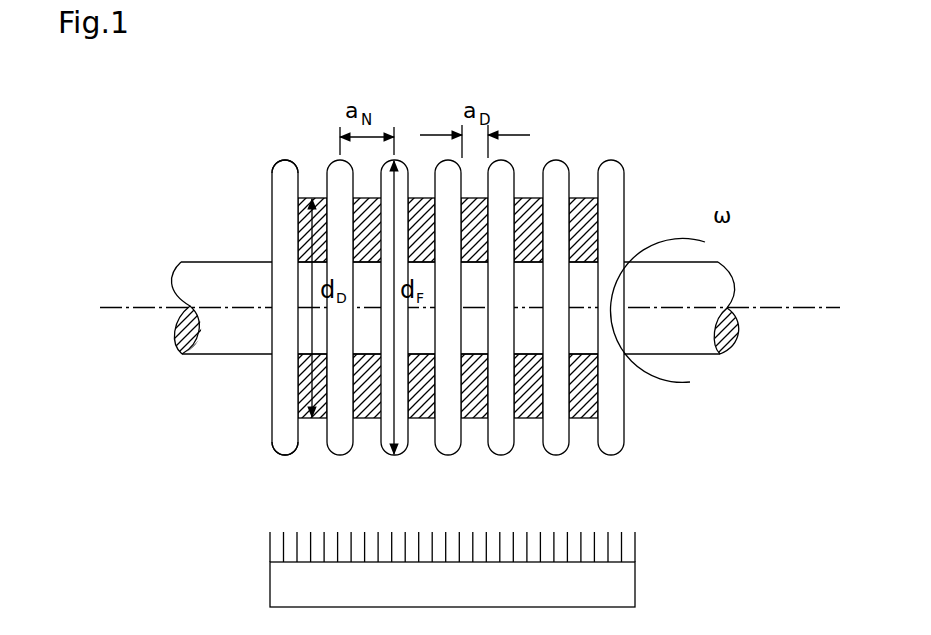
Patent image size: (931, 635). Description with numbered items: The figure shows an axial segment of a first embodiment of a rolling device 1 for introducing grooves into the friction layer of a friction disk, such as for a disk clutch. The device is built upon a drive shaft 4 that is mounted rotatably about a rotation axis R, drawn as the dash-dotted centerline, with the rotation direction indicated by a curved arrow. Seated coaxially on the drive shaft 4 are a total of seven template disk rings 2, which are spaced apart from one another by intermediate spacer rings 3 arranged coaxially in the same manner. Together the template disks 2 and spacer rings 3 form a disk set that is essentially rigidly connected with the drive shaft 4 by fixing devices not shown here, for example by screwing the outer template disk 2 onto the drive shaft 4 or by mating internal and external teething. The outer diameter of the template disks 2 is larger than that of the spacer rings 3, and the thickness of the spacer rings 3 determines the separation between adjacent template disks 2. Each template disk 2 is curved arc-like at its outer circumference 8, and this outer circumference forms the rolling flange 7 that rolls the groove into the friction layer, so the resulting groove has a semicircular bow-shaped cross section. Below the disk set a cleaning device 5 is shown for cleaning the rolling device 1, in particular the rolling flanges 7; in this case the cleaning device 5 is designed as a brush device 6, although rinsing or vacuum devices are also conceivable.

The rolling device 1 is at (640, 135).
The template disk ring 2 is at (285, 205).
The spacer ring 3 is at (592, 218).
The drive shaft 4 is at (218, 335).
The cleaning device 5 is at (615, 580).
The brush device 6 is at (587, 542).
The rolling flange 7 is at (280, 173).
The outer circumference 8 is at (286, 457).
The rotation axis R is at (802, 310).